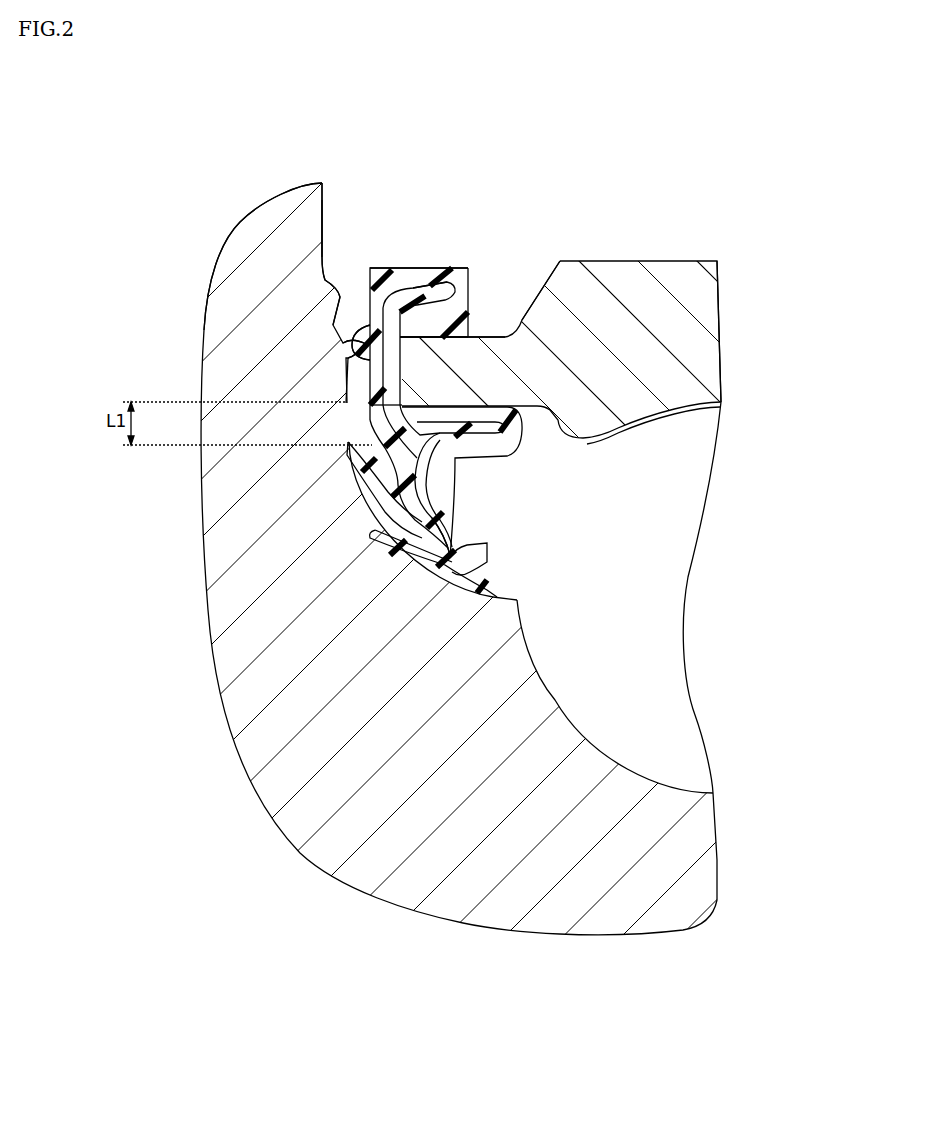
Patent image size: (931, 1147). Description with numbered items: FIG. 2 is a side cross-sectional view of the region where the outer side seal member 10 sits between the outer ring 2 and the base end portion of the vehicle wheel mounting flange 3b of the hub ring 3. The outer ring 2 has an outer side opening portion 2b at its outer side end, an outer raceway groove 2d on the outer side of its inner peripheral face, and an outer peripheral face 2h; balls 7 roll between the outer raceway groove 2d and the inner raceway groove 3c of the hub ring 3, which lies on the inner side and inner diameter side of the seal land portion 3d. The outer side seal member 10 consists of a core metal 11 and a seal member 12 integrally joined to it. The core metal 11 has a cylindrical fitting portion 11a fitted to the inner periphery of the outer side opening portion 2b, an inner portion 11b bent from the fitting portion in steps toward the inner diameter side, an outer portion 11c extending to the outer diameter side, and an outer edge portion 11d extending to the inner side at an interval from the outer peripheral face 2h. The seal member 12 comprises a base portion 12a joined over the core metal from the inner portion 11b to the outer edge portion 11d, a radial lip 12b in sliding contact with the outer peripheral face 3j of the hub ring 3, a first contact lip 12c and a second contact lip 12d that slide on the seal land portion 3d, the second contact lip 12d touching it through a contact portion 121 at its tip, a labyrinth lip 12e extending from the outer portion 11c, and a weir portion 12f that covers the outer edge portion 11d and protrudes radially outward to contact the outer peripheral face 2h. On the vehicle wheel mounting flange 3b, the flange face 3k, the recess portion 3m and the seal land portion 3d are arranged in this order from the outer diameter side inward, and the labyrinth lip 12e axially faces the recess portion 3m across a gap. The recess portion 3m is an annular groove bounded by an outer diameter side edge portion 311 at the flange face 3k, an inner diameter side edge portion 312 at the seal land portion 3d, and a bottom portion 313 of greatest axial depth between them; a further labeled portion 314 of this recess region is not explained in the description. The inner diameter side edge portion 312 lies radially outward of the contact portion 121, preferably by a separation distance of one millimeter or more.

The outer ring 2 is at (644, 257).
The outer side opening portion 2b is at (547, 437).
The outer raceway groove on the outer side 2d is at (607, 403).
The outer peripheral face 2h is at (468, 335).
The hub ring 3 is at (248, 804).
The vehicle wheel mounting flange 3b is at (234, 222).
The inner raceway groove 3c is at (607, 757).
The seal land portion 3d is at (320, 538).
The outer peripheral face of the hub ring 3j is at (500, 595).
The flange face 3k is at (324, 198).
The recess portion 3m is at (344, 317).
The balls 7 is at (677, 685).
The outer side seal member 10 is at (545, 573).
The core metal 11 is at (478, 466).
The fitting portion 11a is at (553, 312).
The inner portion 11b is at (455, 500).
The outer portion 11c is at (480, 340).
The outer edge portion 11d is at (438, 266).
The seal member 12 is at (462, 268).
The base portion 12a is at (370, 422).
The radial lip 12b is at (487, 595).
The first contact lip 12c is at (370, 540).
The second contact lip 12d is at (370, 487).
The labyrinth lip 12e is at (352, 362).
The weir portion 12f is at (395, 262).
The contact portion 121 is at (370, 442).
The outer diameter side edge portion 311 is at (341, 288).
The inner diameter side edge portion 312 is at (352, 380).
The bottom portion 313 is at (345, 347).
The housing groove surface 314 is at (338, 327).